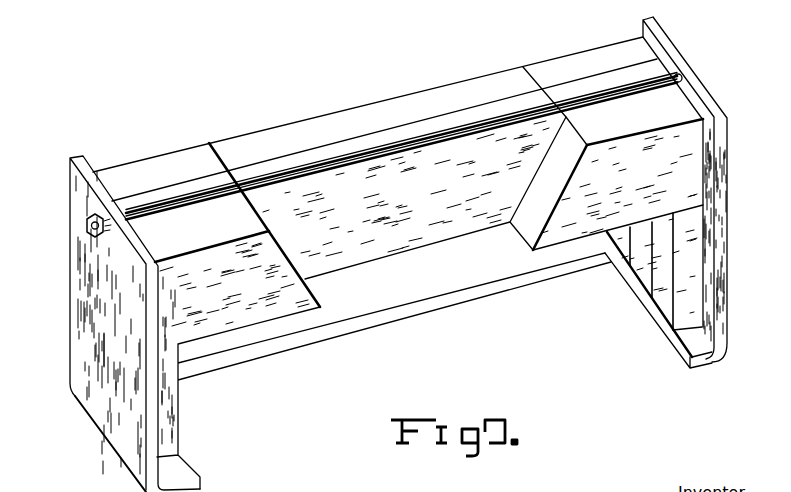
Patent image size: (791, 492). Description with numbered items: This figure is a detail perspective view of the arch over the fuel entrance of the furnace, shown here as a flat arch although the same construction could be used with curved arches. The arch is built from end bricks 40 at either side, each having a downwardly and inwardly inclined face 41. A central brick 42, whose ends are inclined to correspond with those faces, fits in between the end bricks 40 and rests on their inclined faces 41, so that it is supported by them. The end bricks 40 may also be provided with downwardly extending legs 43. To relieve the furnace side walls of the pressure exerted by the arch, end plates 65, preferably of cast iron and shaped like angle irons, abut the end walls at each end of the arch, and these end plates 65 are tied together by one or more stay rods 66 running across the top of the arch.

The end plates 65 is at (100, 348).
The stay rods 66 is at (383, 152).
The end bricks 40 is at (246, 303).
The inclined faces 41 is at (305, 266).
The central brick 42 is at (429, 210).
The downwardly extending legs 43 is at (662, 297).